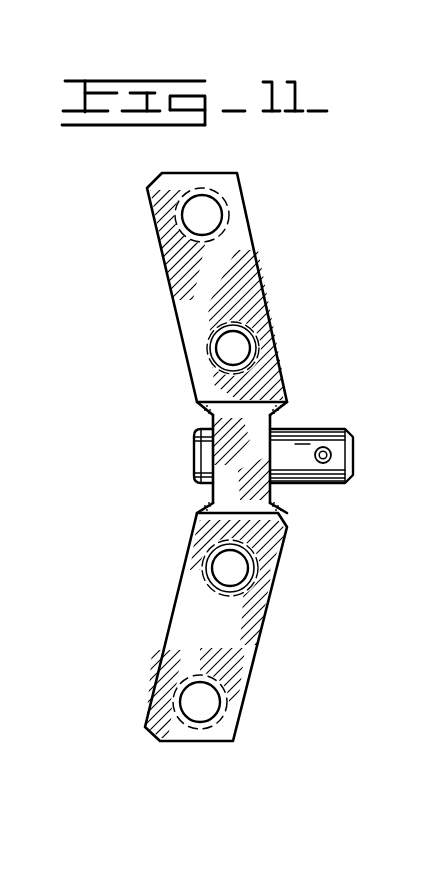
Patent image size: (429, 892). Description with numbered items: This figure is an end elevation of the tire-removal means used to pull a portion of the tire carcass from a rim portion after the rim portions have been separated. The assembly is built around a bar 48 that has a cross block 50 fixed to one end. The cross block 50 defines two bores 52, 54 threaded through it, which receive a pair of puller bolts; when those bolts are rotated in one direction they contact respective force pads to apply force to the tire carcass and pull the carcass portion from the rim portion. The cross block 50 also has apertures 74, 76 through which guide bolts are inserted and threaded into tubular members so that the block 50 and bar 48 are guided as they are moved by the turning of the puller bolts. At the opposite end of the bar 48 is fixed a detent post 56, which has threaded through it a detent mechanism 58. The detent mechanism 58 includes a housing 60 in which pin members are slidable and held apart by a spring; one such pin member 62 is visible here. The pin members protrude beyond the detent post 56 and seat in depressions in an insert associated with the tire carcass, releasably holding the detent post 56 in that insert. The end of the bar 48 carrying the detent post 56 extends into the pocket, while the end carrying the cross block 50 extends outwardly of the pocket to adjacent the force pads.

The bar 48 is at (233, 432).
The cross block 50 is at (225, 647).
The bore 52 is at (248, 342).
The bore 54 is at (245, 575).
The detent post 56 is at (292, 435).
The detent mechanism 58 is at (328, 450).
The housing 60 is at (331, 454).
The pin member 62 is at (335, 467).
The aperture 74 is at (218, 212).
The aperture 76 is at (205, 715).